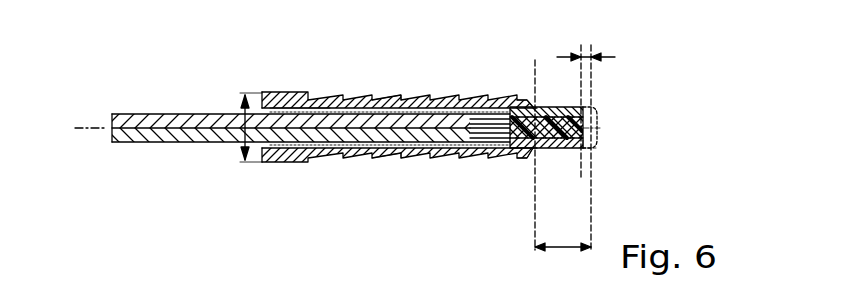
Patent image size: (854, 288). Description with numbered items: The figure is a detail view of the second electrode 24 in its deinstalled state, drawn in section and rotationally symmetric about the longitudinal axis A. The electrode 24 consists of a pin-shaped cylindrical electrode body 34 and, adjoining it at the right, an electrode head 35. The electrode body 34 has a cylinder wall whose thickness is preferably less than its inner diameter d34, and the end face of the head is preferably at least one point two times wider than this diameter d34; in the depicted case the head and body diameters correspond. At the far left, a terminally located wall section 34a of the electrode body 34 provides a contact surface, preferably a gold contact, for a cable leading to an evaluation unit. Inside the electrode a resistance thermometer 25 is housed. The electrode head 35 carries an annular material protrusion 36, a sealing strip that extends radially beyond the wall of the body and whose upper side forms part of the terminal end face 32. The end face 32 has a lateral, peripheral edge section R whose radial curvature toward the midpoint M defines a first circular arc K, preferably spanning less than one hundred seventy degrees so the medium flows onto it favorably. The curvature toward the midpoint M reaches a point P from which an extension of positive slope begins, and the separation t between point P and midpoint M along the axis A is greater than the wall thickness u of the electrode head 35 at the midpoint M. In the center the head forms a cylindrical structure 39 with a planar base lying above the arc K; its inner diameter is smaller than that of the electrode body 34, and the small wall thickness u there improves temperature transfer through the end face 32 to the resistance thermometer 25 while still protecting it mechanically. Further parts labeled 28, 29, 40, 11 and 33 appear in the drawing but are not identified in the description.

The core rope / rod 28 is at (158, 143).
The longitudinal axis A is at (98, 126).
The electrode body 34 is at (462, 93).
The sleeve flange bore 29 is at (322, 112).
The terminally located wall section 34a is at (334, 112).
The resistance thermometer 25 is at (418, 160).
The teeth 40 is at (398, 96).
The electrode 24 is at (363, 162).
The annular material protrusion 36 is at (510, 103).
The edge section R is at (531, 105).
The electrode head 35 is at (535, 107).
The clamped rope end 11 is at (558, 146).
The end face 32 is at (593, 112).
The end cap lower edge 33 is at (600, 150).
The midpoint M is at (600, 127).
The cylindrical structure 39 is at (590, 148).
The first circular arc K is at (529, 152).
The point P is at (537, 147).
The wall thickness u is at (586, 103).
The separation t is at (563, 235).
The diameter of the electrode body d34 is at (233, 144).